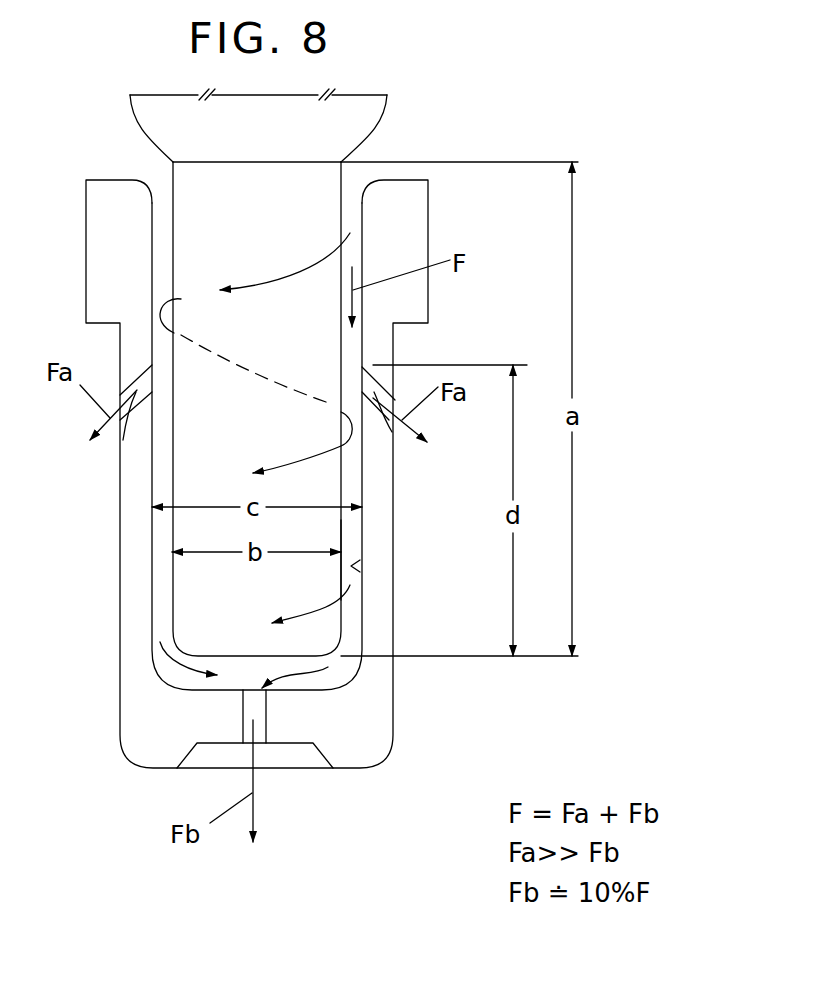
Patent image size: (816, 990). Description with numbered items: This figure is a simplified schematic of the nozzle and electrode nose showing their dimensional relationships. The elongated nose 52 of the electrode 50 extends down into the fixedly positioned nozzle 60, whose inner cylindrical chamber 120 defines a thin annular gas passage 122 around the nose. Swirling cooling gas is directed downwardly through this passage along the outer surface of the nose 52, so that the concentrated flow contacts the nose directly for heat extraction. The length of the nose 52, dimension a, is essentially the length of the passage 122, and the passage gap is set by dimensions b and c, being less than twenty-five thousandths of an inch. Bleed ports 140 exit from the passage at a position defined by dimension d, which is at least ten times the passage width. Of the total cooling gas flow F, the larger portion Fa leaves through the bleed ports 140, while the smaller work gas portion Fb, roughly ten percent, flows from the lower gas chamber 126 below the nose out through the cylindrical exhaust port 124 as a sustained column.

The electrode 50 is at (175, 188).
The nose 52 is at (332, 223).
The nozzle 60 is at (397, 700).
The inner cylindrical chamber 120 is at (357, 570).
The thin annular gas passage 122 is at (350, 540).
The cylindrical exhaust port 124 is at (247, 703).
The lower gas chamber 126 is at (307, 682).
The bleed ports 140 is at (137, 397).